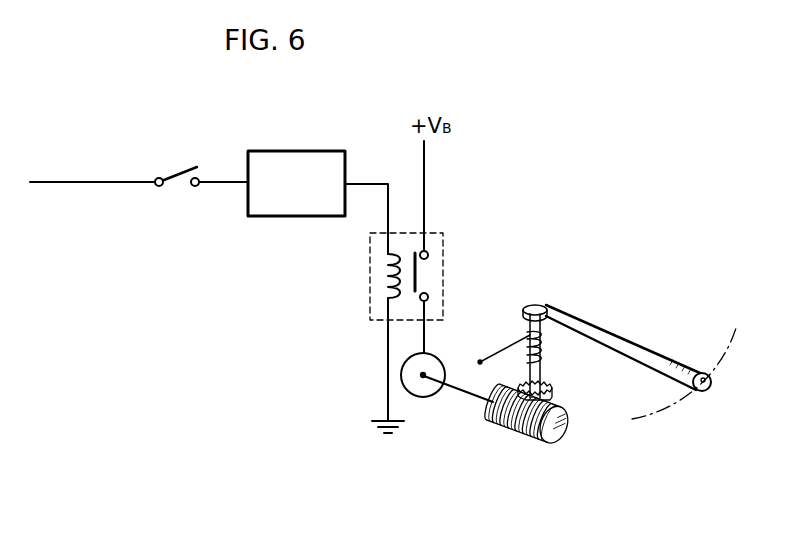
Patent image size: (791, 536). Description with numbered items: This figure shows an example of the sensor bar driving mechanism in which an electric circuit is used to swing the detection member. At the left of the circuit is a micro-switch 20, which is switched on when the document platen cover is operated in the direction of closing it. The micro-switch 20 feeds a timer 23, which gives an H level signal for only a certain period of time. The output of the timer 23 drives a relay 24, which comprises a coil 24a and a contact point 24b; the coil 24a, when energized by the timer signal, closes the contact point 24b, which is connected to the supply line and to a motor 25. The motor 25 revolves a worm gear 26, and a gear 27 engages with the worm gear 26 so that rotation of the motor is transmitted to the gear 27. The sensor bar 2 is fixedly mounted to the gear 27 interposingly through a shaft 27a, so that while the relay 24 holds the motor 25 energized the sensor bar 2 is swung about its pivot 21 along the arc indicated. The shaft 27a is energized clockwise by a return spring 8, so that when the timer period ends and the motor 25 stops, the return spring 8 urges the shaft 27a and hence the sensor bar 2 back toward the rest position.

The sensor bar 2 is at (615, 345).
The return spring 8 is at (510, 345).
The micro-switch 20 is at (176, 172).
The pivot 21 is at (703, 392).
The timer 23 is at (286, 157).
The relay 24 is at (407, 284).
The coil 24a is at (390, 291).
The contact point 24b is at (418, 283).
The motor 25 is at (424, 390).
The worm gear 26 is at (560, 445).
The gear 27 is at (552, 385).
The shaft 27a is at (542, 357).